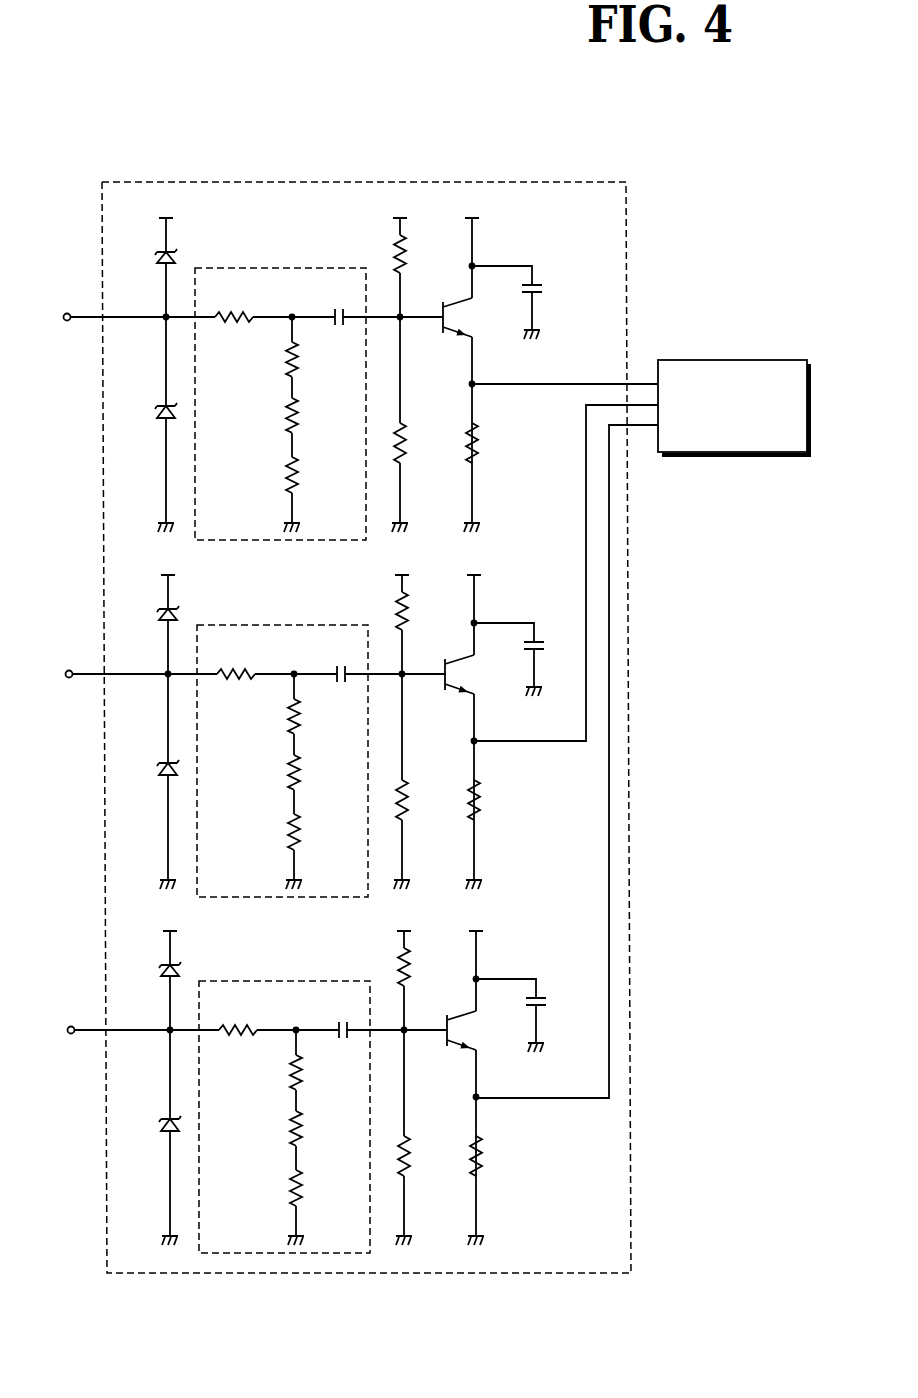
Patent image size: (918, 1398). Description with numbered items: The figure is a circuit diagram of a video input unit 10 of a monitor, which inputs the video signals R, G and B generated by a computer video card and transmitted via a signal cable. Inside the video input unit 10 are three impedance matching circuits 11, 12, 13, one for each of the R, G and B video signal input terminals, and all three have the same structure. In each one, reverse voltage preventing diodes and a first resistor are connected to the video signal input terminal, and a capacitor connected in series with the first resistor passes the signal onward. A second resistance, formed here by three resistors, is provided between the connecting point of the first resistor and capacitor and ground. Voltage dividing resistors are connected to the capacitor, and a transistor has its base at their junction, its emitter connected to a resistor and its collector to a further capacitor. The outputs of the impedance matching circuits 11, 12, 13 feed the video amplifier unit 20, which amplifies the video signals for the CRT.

The video input unit 10 is at (405, 180).
The impedance matching circuit 11 is at (282, 268).
The impedance matching circuit 12 is at (282, 731).
The impedance matching circuit 13 is at (284, 1087).
The video amplifier unit 20 is at (737, 360).